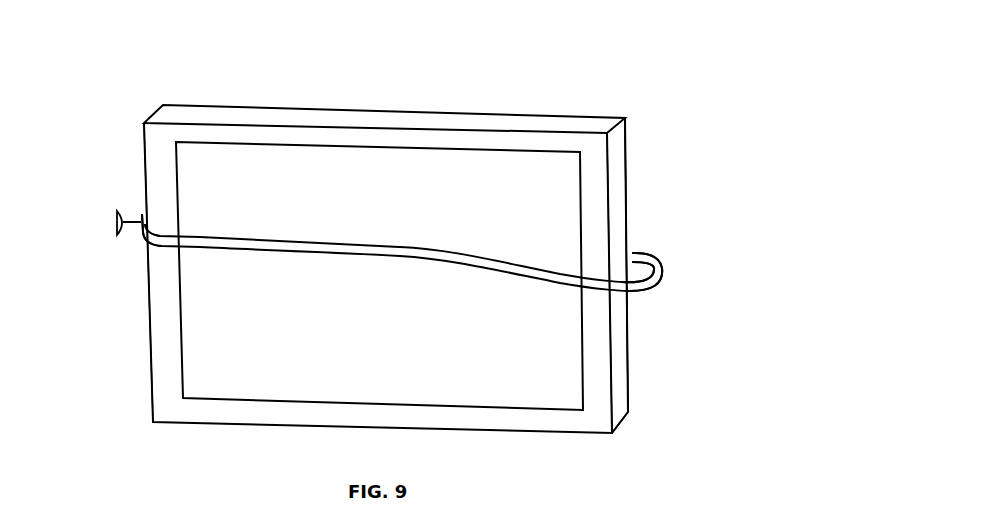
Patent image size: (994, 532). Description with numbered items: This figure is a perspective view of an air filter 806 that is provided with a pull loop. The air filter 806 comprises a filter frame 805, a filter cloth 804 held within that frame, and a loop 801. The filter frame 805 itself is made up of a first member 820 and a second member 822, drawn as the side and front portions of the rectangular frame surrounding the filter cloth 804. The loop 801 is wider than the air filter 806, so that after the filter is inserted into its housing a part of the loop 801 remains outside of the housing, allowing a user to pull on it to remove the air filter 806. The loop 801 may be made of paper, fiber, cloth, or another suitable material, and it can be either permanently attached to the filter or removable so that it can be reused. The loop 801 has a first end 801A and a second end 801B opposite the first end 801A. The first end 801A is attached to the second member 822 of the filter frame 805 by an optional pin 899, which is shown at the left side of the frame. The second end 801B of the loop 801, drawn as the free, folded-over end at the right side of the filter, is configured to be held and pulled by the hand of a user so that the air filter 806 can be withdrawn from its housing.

The air filter 806 is at (540, 80).
The filter cloth 804 is at (497, 383).
The first member 820 is at (622, 348).
The filter frame 805 is at (627, 382).
The second member 822 is at (170, 356).
The loop 801 is at (413, 256).
The first end 801A is at (136, 246).
The second end 801B is at (676, 270).
The pin 899 is at (104, 222).